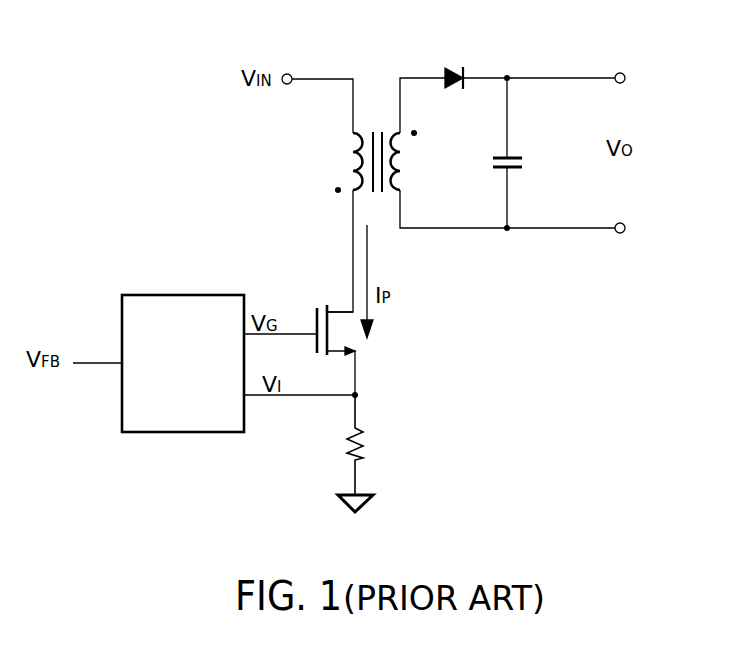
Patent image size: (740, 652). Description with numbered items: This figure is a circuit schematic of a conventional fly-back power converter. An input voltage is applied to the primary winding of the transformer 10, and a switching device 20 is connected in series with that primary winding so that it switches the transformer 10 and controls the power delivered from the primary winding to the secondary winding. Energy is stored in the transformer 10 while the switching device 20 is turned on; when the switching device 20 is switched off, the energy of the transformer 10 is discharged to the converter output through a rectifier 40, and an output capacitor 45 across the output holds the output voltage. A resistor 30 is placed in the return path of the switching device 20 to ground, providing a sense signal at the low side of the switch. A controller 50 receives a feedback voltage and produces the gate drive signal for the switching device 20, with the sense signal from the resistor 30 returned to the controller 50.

The transformer 10 is at (342, 142).
The power switch transistor 20 is at (314, 311).
The current sense resistor 30 is at (361, 430).
The rectifier diode 40 is at (455, 64).
The output capacitor 45 is at (520, 151).
The controller 50 is at (132, 320).